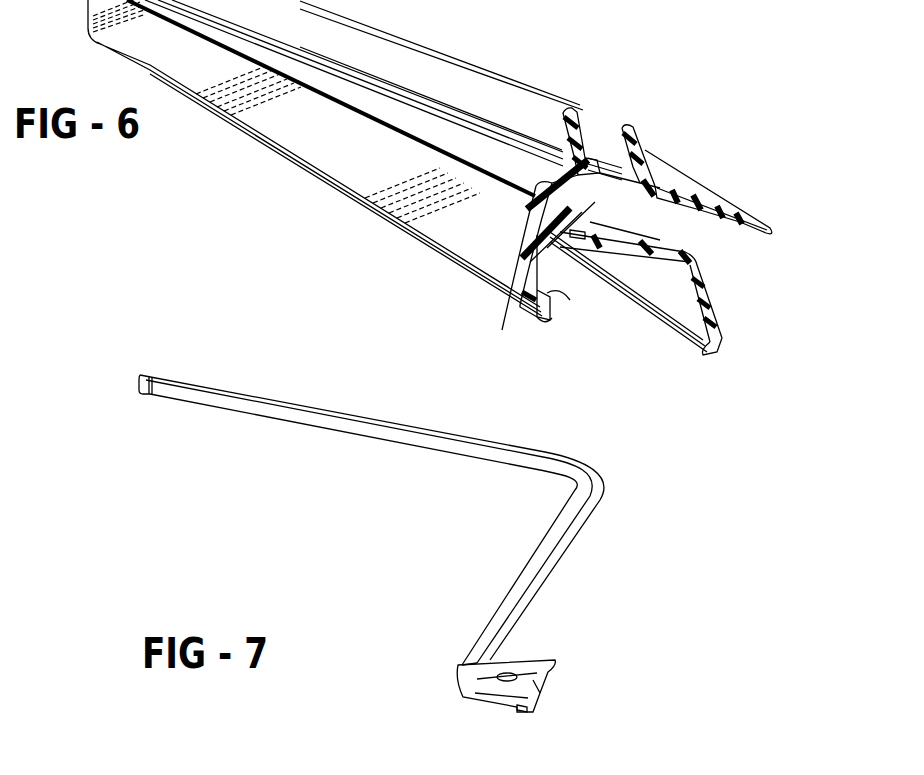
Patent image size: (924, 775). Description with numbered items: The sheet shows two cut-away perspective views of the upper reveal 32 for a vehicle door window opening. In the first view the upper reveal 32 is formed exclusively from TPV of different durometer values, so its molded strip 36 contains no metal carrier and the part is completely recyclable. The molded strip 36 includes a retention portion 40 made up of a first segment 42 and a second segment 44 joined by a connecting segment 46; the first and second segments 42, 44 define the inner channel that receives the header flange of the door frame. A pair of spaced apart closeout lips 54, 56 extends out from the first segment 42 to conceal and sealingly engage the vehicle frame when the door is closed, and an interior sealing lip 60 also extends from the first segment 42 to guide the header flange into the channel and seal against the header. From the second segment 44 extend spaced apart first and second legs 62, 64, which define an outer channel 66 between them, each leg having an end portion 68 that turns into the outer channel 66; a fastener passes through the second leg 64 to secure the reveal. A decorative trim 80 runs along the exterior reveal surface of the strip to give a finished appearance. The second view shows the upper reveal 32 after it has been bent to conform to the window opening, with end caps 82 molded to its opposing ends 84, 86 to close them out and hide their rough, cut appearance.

In FIG. 6, the upper reveal 32 is at (302, 197).
In FIG. 7, the upper reveal 32 is at (419, 456).
In FIG. 6, the molded strip 36 is at (535, 177).
In FIG. 6, the retention portion 40 is at (545, 217).
In FIG. 6, the first segment 42 is at (590, 158).
In FIG. 6, the second segment 44 is at (620, 255).
In FIG. 6, the connecting segment 46 is at (533, 266).
In FIG. 6, the closeout lip 54 is at (581, 124).
In FIG. 6, the closeout lip 56 is at (650, 148).
In FIG. 6, the interior sealing lip 60 is at (733, 226).
In FIG. 6, the first leg 62 is at (533, 272).
In FIG. 6, the second leg 64 is at (717, 323).
In FIG. 6, the outer channel 66 is at (548, 290).
In FIG. 6, the end portion 68 is at (553, 313).
In FIG. 6, the decorative trim 80 is at (302, 121).
In FIG. 7, the end caps 82 is at (138, 384).
In FIG. 7, the end 84 is at (156, 396).
In FIG. 7, the end 86 is at (478, 647).